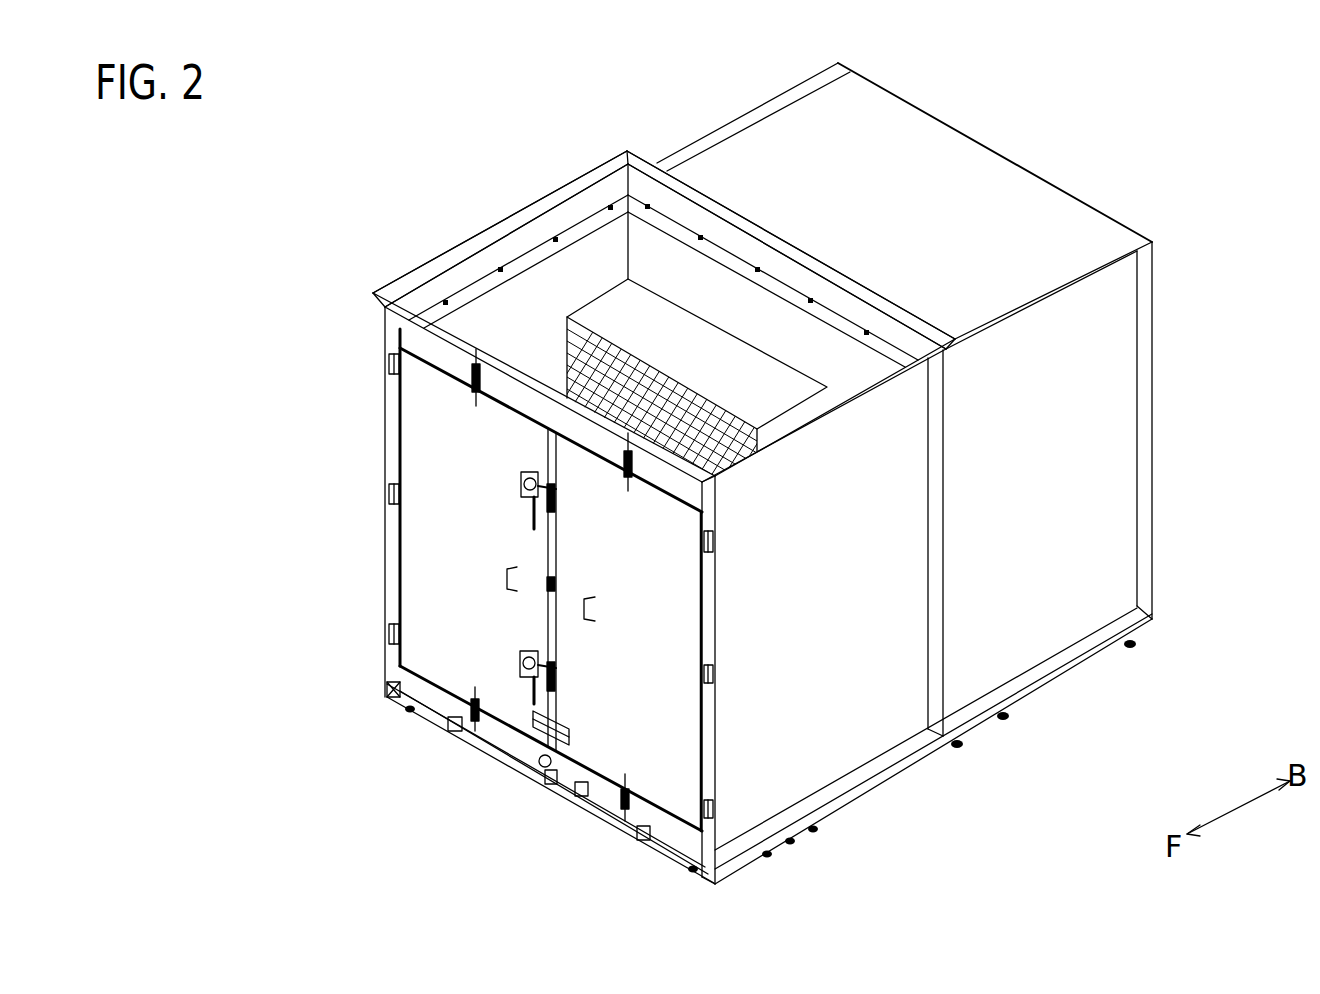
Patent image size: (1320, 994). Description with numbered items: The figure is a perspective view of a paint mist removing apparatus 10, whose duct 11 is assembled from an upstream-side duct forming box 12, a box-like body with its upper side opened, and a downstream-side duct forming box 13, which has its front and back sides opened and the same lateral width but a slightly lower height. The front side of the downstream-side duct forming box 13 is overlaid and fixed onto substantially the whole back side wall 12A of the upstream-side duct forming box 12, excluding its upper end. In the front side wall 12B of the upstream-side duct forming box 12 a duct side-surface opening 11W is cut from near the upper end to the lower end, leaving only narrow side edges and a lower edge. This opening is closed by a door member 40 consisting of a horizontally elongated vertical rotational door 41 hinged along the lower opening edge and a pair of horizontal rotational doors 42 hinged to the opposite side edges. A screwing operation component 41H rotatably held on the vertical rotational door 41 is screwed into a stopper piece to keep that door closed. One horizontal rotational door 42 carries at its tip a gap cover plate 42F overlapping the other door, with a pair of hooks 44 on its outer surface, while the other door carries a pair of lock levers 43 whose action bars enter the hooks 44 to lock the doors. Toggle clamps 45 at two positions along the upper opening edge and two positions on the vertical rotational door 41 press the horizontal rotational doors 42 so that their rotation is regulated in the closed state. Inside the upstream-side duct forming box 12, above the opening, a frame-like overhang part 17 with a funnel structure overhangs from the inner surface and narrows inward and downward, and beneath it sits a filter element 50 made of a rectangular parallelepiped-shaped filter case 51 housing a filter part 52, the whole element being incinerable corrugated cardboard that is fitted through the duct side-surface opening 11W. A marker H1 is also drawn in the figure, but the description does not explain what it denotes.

The paint mist removing apparatus 10 is at (393, 125).
The duct 11 is at (1071, 790).
The duct side-surface opening 11W is at (464, 374).
The upstream-side duct forming box 12 is at (878, 687).
The back side wall 12A is at (680, 287).
The front side wall 12B is at (424, 303).
The downstream-side duct forming box 13 is at (973, 648).
The frame-like overhang part 17 is at (512, 270).
The door member 40 is at (521, 611).
The vertical rotational door 41 is at (582, 783).
The screwing operation component 41H is at (545, 772).
The horizontal rotational door 42 is at (438, 570).
The gap cover plate 42F is at (557, 568).
The lock lever 43 is at (527, 505).
The hook 44 is at (557, 500).
The toggle clamp 45 is at (624, 465).
The filter element 50 is at (674, 303).
The filter case 51 is at (600, 257).
The filter part 52 is at (637, 332).
The height direction H1 is at (1238, 806).